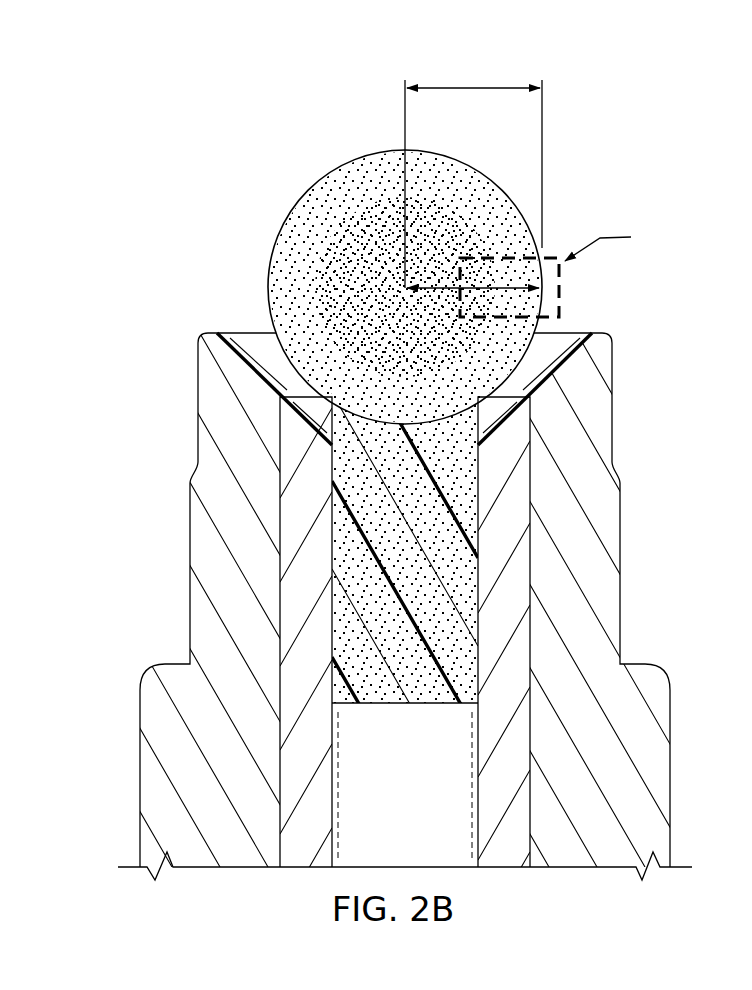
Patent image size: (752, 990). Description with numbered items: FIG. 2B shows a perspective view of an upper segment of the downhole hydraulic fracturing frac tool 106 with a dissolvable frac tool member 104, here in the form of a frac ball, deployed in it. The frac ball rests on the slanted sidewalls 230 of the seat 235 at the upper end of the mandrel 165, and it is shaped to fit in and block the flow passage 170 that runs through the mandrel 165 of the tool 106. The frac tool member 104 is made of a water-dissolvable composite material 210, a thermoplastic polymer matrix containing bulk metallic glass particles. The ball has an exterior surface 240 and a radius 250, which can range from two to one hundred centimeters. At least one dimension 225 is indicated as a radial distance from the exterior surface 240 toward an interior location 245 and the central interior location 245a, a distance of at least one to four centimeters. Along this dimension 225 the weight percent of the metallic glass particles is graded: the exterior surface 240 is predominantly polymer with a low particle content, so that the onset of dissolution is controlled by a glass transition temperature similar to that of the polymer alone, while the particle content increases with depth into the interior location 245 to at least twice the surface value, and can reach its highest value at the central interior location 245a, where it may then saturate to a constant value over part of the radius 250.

The frac tool 106 is at (270, 76).
The frac tool member 104 is at (338, 150).
The mandrel 165 is at (137, 765).
The flow passage 170 is at (386, 795).
The water-dissolvable composite material 210 is at (385, 402).
The dimension 225 is at (503, 283).
The slanted sidewalls 230 is at (569, 333).
The seat 235 is at (243, 329).
The exterior surface 240 is at (465, 162).
The interior location 245 is at (328, 281).
The central interior location 245a is at (402, 287).
The radius 250 is at (474, 87).